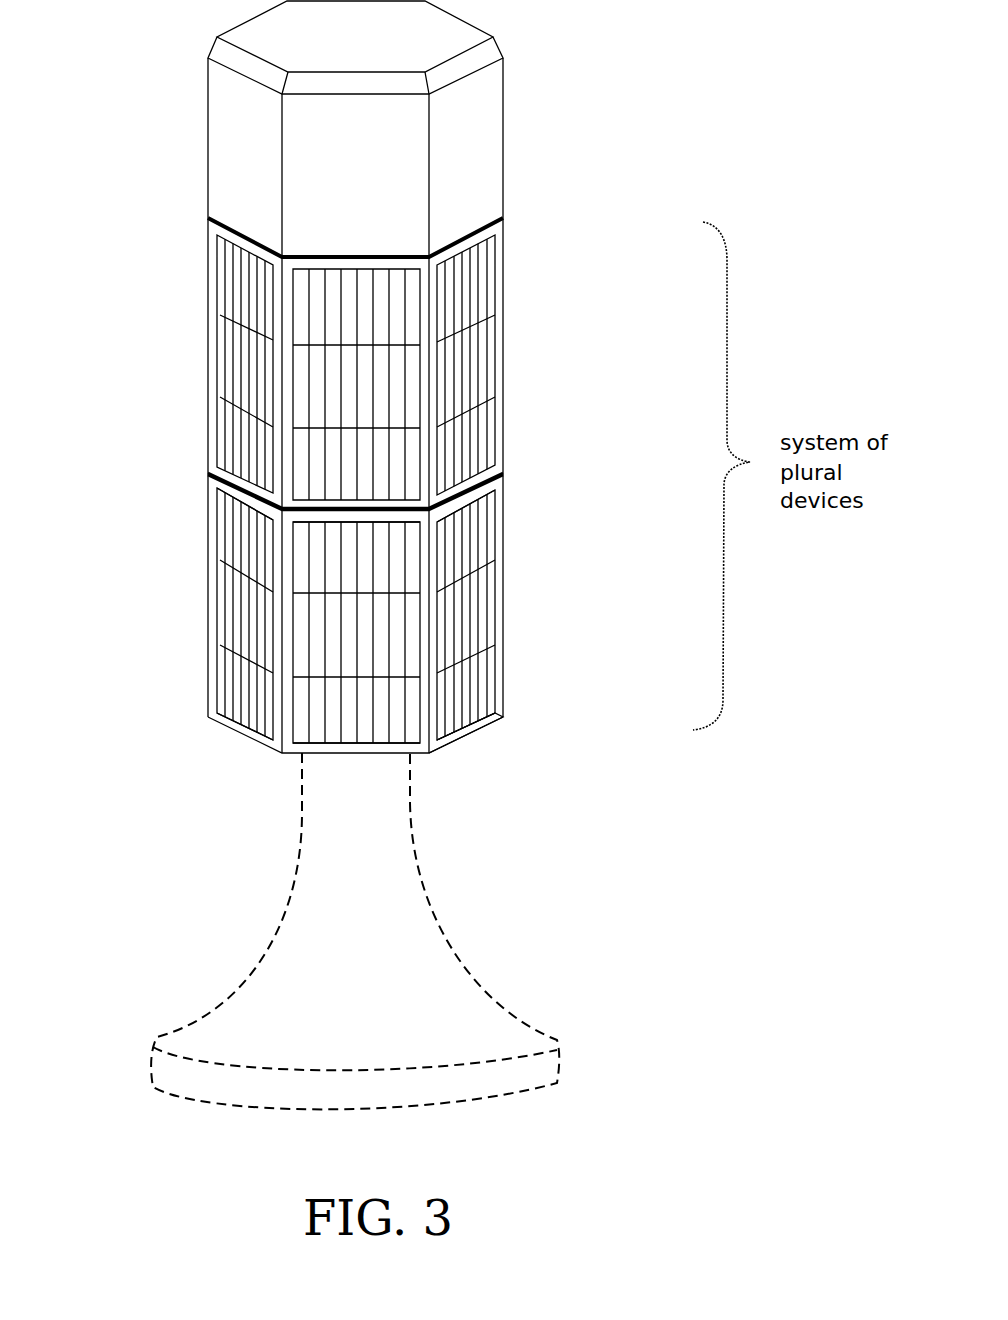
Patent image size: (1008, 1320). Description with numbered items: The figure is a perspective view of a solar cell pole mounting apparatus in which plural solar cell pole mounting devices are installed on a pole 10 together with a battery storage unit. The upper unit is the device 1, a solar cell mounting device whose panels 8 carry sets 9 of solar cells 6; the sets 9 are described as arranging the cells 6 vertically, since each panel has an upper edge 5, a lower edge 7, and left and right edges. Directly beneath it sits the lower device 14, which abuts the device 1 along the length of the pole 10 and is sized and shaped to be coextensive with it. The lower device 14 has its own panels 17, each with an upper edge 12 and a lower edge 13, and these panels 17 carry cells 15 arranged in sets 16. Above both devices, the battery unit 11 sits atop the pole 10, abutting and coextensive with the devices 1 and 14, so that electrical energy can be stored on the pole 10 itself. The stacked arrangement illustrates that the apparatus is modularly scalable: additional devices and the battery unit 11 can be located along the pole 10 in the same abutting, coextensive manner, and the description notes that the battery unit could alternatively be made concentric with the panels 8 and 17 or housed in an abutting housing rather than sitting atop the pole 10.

The device 1 is at (598, 227).
The upper edge 5 is at (497, 231).
The solar cells 6 is at (200, 225).
The lower edge 7 is at (503, 472).
The panels 8 is at (500, 473).
The sets of solar cells 9 is at (468, 298).
The pole 10 is at (427, 990).
The battery unit 11 is at (557, 98).
The upper edge 12 is at (503, 482).
The lower edge 13 is at (503, 717).
The lower device 14 is at (487, 748).
The cells 15 is at (200, 480).
The sets 16 is at (468, 603).
The panels 17 is at (440, 752).